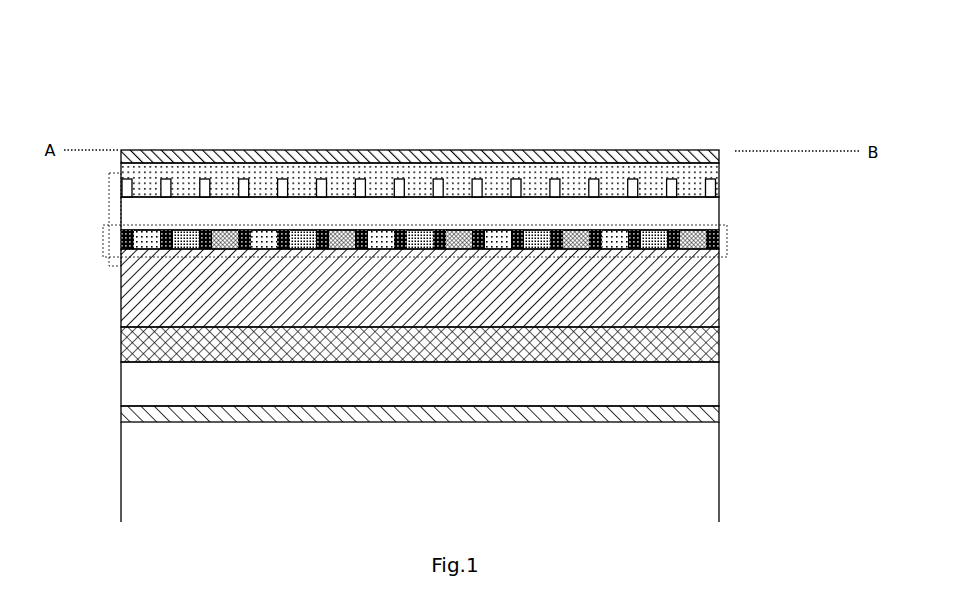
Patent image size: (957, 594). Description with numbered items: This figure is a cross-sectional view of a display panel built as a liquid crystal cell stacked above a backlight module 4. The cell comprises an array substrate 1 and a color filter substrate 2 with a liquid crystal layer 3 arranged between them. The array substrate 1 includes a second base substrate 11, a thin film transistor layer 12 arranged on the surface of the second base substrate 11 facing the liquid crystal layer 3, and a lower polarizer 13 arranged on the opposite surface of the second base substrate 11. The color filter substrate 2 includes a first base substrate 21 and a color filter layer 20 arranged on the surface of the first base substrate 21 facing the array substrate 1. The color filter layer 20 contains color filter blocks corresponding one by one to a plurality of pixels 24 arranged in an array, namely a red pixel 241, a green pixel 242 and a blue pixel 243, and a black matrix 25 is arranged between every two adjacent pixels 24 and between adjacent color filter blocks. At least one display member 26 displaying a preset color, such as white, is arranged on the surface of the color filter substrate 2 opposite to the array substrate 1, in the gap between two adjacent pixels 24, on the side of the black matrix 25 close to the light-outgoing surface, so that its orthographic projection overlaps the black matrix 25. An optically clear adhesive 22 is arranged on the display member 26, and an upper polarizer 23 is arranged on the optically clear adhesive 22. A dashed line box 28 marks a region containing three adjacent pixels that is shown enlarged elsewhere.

The array substrate 1 is at (795, 310).
The second base substrate 11 is at (703, 387).
The thin film transistor layer 12 is at (713, 343).
The lower polarizer 13 is at (705, 413).
The color filter substrate 2 is at (793, 185).
The color filter layer 20 is at (448, 136).
The first base substrate 21 is at (700, 218).
The optically clear adhesive 22 is at (457, 135).
The upper polarizer 23 is at (700, 158).
The pixel 24 is at (420, 132).
The red pixel 241 is at (148, 237).
The green pixel 242 is at (187, 230).
The blue pixel 243 is at (222, 227).
The black matrix 25 is at (357, 230).
The display member 26 is at (478, 190).
The dashed line box 28 is at (110, 190).
The liquid crystal layer 3 is at (713, 289).
The backlight module 4 is at (703, 490).